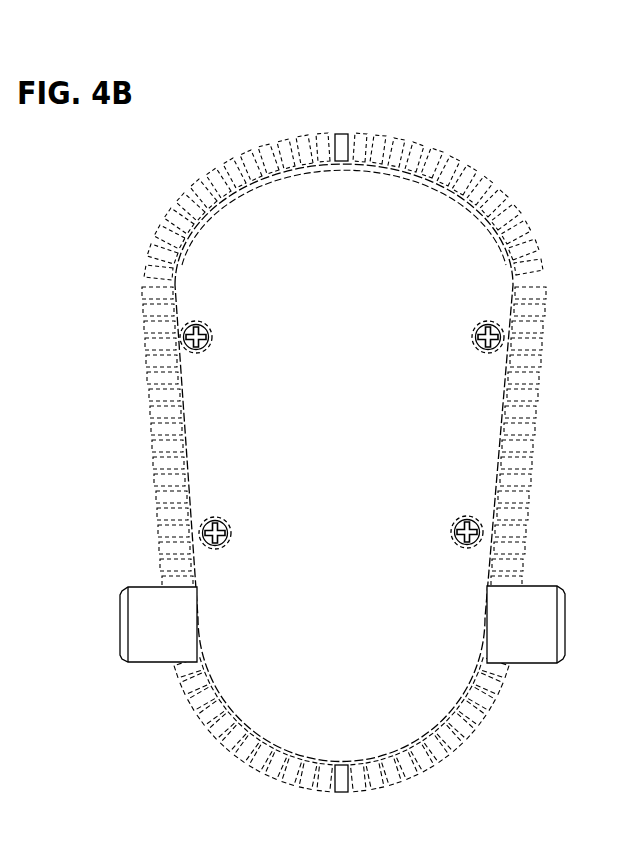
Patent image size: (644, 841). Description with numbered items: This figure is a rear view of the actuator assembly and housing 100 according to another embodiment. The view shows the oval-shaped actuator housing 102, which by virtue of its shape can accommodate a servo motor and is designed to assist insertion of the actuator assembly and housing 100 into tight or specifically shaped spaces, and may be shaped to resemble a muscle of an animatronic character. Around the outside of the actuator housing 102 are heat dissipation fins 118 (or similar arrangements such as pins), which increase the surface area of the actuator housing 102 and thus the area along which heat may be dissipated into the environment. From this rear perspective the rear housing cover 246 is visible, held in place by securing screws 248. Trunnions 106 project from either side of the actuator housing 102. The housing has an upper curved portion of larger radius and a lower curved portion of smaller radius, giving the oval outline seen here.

The actuator assembly and housing 100 is at (236, 182).
The actuator housing 102 is at (197, 240).
The heat dissipation fins 118 is at (150, 422).
The trunnions 106 is at (122, 646).
The rear housing cover 246 is at (205, 388).
The securing screws 248 is at (198, 533).